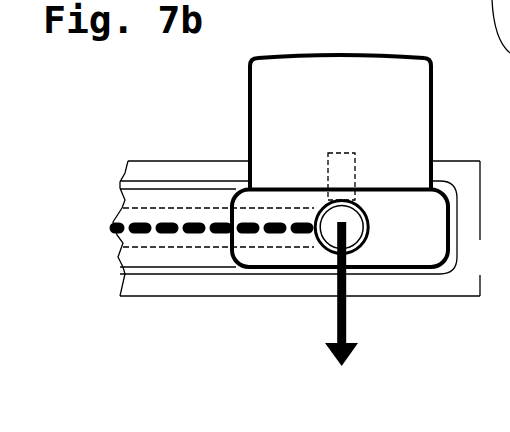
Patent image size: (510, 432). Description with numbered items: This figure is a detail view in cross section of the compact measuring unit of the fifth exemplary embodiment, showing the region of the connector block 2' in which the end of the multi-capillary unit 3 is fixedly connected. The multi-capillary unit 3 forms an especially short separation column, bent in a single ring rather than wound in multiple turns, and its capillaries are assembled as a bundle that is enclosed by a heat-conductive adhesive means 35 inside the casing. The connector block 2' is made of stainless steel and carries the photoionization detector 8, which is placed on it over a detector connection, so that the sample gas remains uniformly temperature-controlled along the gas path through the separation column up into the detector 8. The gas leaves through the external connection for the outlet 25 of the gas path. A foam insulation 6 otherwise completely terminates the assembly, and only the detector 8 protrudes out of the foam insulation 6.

The photoionization detector 8 is at (277, 110).
The foam insulation 6 is at (133, 197).
The multi-capillary unit 3 is at (138, 238).
The heat-conductive adhesive means 35 is at (167, 240).
The outlet 25 is at (322, 294).
The connector block 2' is at (354, 279).